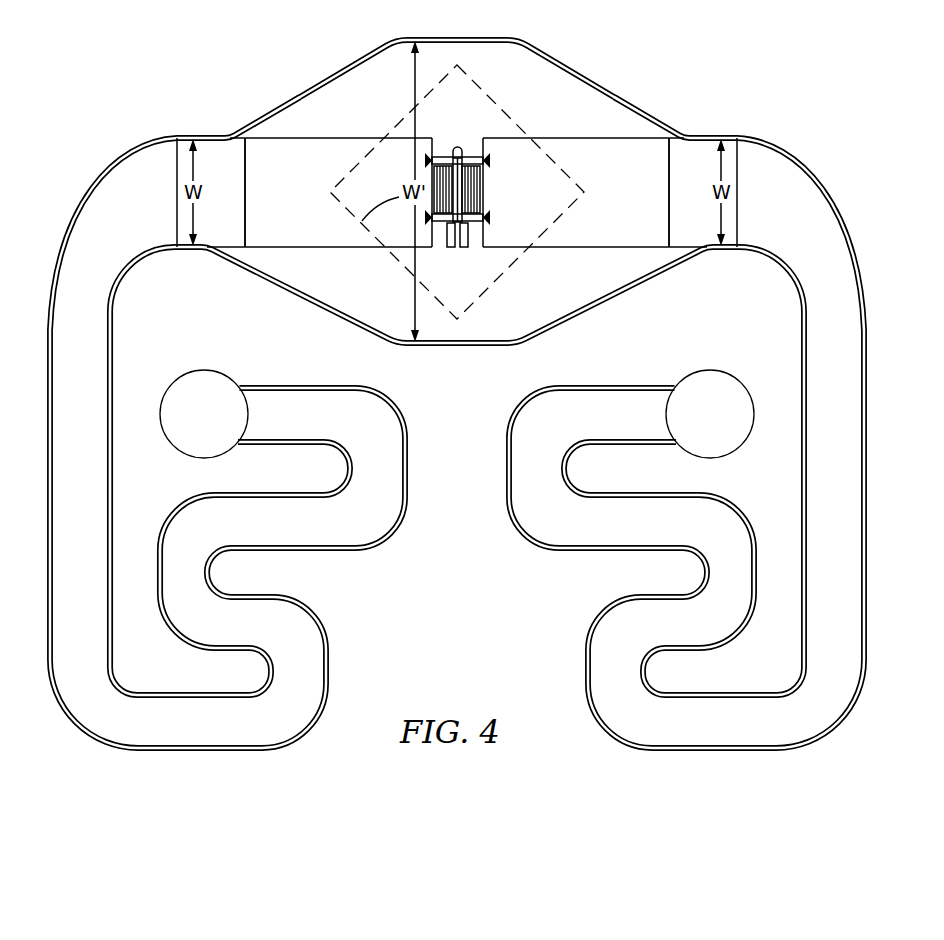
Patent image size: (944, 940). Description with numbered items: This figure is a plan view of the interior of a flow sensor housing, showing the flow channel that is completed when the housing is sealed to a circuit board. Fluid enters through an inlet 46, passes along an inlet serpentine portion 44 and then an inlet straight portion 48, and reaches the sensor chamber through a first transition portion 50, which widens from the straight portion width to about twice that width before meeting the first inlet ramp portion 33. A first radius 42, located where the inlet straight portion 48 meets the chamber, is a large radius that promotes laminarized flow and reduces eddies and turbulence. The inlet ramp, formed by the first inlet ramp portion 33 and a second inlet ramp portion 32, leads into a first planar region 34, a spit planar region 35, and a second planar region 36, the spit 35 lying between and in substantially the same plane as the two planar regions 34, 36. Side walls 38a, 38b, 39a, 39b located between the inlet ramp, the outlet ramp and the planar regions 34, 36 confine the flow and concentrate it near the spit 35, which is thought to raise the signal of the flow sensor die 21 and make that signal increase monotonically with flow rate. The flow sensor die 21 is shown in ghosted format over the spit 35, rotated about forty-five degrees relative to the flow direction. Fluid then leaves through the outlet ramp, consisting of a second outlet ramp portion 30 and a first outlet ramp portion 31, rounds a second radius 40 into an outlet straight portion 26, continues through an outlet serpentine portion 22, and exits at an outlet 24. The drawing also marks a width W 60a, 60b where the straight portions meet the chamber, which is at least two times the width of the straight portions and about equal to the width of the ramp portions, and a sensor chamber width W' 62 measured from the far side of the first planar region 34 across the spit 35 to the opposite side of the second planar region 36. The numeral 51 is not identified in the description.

The flow sensor die 21 is at (500, 277).
The outlet serpentine portion 22 is at (303, 663).
The outlet 24 is at (199, 401).
The outlet straight portion 26 is at (86, 466).
The second outlet ramp portion 30 is at (294, 146).
The first outlet ramp portion 31 is at (217, 147).
The second inlet ramp portion 32 is at (633, 158).
The first inlet ramp portion 33 is at (728, 167).
The first planar region 34 is at (372, 75).
The spit planar region 35 is at (473, 153).
The second planar region 36 is at (510, 313).
The side wall 38a is at (610, 250).
The side wall 38b is at (585, 137).
The side wall 39a is at (310, 253).
The side wall 39b is at (330, 137).
The second radius 40 is at (143, 272).
The first radius 42 is at (743, 253).
The inlet serpentine portion 44 is at (557, 512).
The inlet 46 is at (705, 368).
The inlet straight portion 48 is at (830, 488).
The first transition portion 50 is at (785, 237).
The left outer curve 51 is at (110, 238).
The width W 60a is at (213, 188).
The width W 60b is at (710, 190).
The sensor chamber width W' 62 is at (362, 221).